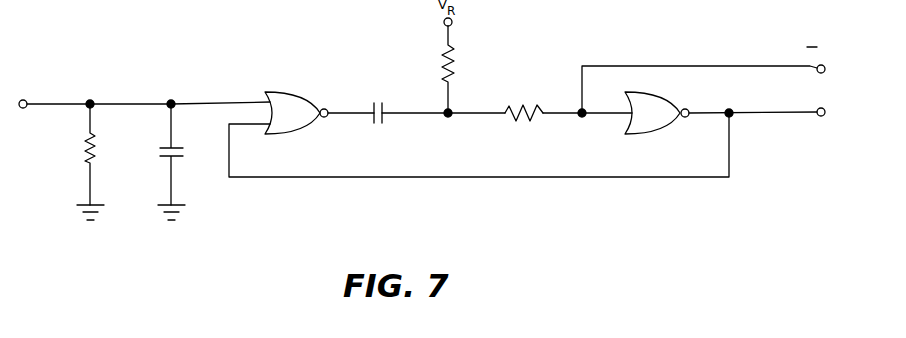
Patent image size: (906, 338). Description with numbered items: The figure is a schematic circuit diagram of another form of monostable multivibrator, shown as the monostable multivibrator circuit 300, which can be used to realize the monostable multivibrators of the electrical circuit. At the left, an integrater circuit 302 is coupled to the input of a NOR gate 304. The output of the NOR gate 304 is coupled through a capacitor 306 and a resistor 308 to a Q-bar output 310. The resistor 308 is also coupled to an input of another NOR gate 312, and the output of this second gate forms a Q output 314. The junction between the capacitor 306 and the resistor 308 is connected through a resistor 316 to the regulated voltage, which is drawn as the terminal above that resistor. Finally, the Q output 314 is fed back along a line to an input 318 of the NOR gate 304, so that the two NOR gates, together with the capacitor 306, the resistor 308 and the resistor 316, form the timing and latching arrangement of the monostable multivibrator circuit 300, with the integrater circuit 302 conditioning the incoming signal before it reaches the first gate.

The monostable multivibrator circuit 300 is at (522, 187).
The integrater circuit 302 is at (147, 163).
The NOR gate 304 is at (295, 98).
The capacitor 306 is at (385, 106).
The resistor 308 is at (526, 120).
The Q-bar output 310 is at (806, 73).
The NOR gate 312 is at (658, 120).
The Q output 314 is at (790, 116).
The resistor 316 is at (456, 62).
The input 318 is at (244, 124).